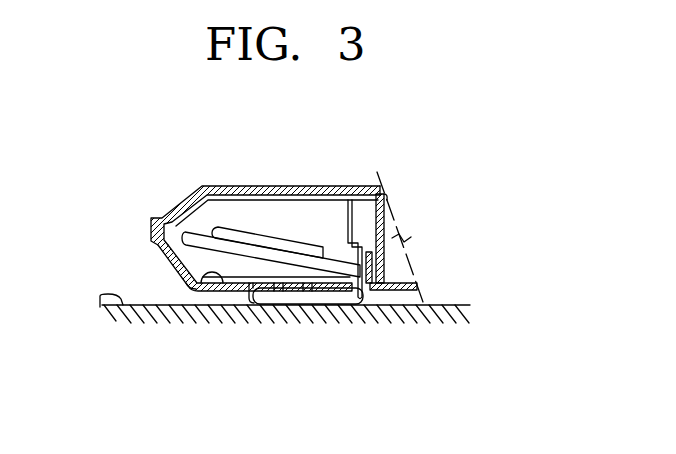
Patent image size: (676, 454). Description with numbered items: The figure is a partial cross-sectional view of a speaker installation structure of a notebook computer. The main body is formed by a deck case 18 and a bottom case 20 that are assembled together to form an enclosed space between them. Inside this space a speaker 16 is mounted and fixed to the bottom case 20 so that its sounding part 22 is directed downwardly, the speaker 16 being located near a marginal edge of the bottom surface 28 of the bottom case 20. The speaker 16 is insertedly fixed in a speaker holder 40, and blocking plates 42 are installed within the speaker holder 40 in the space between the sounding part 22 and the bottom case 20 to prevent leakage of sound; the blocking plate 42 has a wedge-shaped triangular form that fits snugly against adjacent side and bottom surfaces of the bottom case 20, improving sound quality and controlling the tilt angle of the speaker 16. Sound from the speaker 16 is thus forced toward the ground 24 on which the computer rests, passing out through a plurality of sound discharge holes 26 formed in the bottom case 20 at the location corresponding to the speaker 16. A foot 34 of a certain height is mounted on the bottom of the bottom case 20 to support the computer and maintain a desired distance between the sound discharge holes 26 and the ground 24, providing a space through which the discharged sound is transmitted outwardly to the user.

The speaker 16 is at (277, 233).
The deck case 18 is at (213, 186).
The bottom case 20 is at (178, 262).
The sounding part 22 is at (303, 255).
The ground 24 is at (104, 297).
The sound discharge holes 26 is at (233, 283).
The bottom surface 28 is at (203, 283).
The foot 34 is at (335, 298).
The speaker holder 40 is at (350, 210).
The blocking plates 42 is at (181, 282).